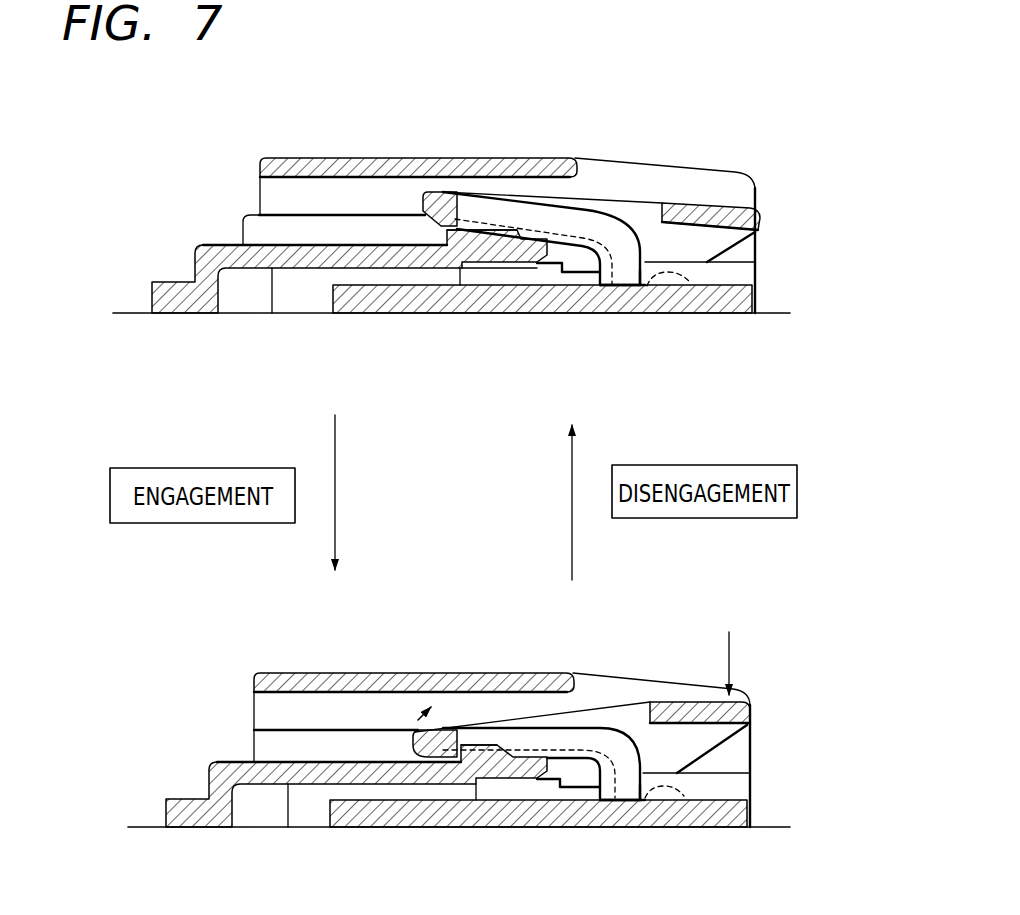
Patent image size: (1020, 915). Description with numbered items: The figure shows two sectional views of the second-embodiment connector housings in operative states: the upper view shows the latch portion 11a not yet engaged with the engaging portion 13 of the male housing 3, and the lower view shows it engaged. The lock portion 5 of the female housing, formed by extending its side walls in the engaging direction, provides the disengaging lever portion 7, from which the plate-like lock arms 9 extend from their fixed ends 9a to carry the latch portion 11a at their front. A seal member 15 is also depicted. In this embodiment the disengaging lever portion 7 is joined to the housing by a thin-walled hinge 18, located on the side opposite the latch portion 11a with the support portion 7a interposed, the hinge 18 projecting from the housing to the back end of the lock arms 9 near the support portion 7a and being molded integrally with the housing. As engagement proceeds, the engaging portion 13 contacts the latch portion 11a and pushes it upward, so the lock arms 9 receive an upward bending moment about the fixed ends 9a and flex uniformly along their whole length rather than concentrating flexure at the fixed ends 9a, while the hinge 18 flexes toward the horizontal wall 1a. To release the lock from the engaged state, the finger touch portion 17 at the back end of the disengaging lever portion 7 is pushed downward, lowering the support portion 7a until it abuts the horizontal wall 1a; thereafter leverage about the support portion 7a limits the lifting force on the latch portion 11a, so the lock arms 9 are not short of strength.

The horizontal wall 1a is at (733, 300).
The male housing 3 is at (198, 240).
The lock portion 5 is at (282, 130).
The disengaging lever portion 7 is at (614, 206).
The support portion 7a is at (640, 300).
The lock arms 9 is at (588, 206).
The fixed ends 9a is at (605, 300).
The latch portion 11a is at (436, 193).
The engaging portion 13 is at (440, 230).
The seal member 15 is at (499, 270).
The finger touch portion 17 is at (697, 200).
The thin-walled hinge 18 is at (675, 278).